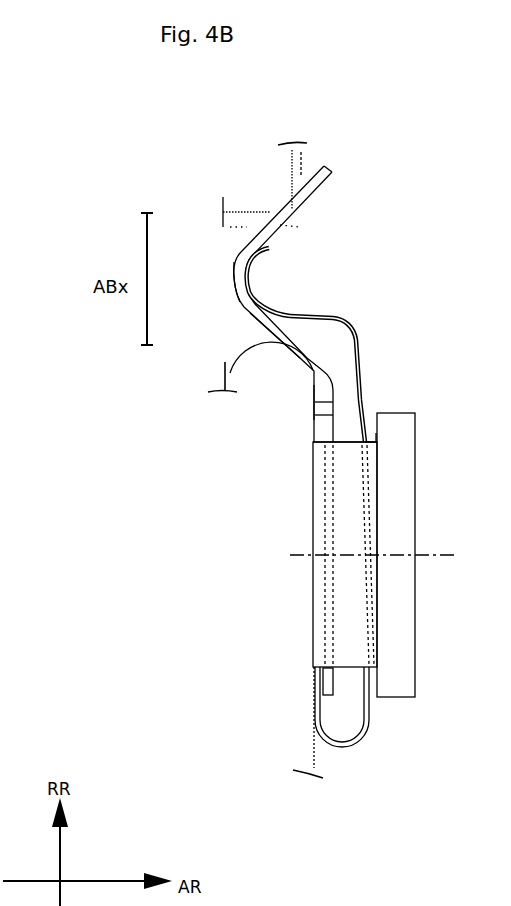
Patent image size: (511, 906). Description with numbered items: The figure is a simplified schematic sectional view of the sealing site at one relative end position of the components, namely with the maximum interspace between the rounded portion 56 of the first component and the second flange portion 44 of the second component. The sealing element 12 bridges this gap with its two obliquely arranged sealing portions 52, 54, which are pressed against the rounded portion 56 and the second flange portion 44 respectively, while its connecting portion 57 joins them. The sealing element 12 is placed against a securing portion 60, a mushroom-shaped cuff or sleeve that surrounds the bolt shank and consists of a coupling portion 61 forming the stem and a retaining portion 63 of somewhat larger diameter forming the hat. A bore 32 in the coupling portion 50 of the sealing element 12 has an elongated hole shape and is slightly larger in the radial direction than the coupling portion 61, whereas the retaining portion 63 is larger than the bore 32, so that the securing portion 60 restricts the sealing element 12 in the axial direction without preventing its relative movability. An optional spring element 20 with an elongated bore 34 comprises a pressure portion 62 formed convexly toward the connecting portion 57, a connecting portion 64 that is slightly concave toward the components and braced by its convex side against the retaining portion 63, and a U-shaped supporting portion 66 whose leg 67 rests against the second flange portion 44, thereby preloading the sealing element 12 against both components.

The sealing element 12 is at (305, 382).
The spring element 20 is at (378, 342).
The bore 32 is at (327, 435).
The bore 34 is at (370, 420).
The second flange portion 44 is at (230, 363).
The coupling portion 50 is at (328, 402).
The sealing portion 52 is at (292, 208).
The sealing portion 54 is at (268, 318).
The rounded portion 56 is at (247, 212).
The connecting portion 57 is at (248, 271).
The securing portion 60 is at (400, 578).
The coupling portion 61 is at (343, 530).
The pressure portion 62 is at (250, 271).
The retaining portion 63 is at (392, 487).
The connecting portion 64 is at (362, 363).
The supporting portion 66 is at (341, 748).
The leg 67 is at (315, 712).